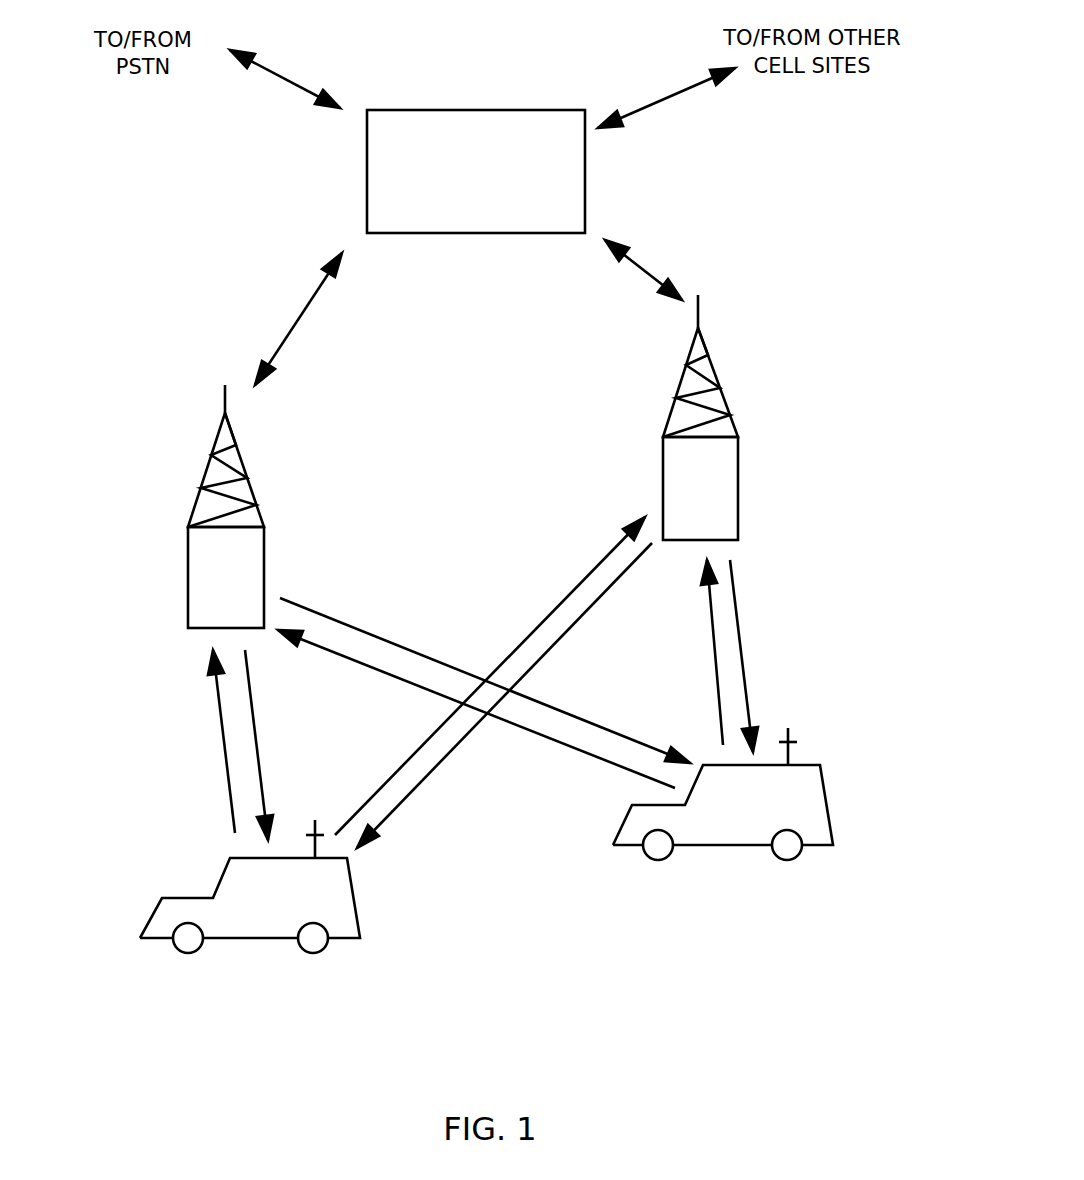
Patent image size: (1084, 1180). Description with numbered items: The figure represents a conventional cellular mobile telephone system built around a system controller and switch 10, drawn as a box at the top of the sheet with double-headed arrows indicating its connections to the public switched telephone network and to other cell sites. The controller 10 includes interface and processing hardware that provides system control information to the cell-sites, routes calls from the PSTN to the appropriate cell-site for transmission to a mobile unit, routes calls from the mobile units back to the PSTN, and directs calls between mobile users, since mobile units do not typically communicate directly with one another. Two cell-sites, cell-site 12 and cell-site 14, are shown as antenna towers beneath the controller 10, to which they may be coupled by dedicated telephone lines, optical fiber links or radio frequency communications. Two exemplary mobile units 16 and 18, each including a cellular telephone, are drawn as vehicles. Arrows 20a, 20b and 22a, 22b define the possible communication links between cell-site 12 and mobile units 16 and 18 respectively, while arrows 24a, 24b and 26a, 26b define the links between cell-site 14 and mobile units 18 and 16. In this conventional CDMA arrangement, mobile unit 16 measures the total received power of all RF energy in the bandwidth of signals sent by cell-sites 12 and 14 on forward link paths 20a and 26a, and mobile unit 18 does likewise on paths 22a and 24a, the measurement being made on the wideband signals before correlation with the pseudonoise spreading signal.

The system controller and switch 10 is at (473, 110).
The cell-site 12 is at (188, 565).
The cell-site 14 is at (738, 478).
The mobile unit 16 is at (250, 942).
The mobile unit 18 is at (753, 848).
The forward link path 20a is at (260, 757).
The communication link 20b is at (223, 748).
The forward link path 22a is at (397, 642).
The communication link 22b is at (380, 672).
The forward link path 24a is at (748, 663).
The communication link 24b is at (713, 670).
The forward link path 26a is at (435, 772).
The communication link 26b is at (408, 757).